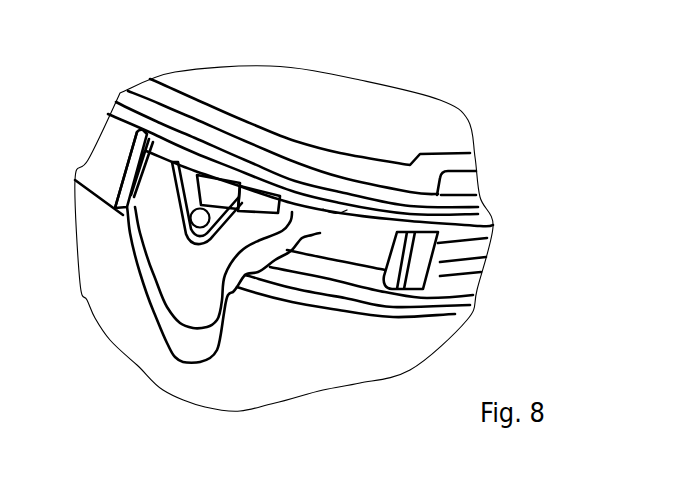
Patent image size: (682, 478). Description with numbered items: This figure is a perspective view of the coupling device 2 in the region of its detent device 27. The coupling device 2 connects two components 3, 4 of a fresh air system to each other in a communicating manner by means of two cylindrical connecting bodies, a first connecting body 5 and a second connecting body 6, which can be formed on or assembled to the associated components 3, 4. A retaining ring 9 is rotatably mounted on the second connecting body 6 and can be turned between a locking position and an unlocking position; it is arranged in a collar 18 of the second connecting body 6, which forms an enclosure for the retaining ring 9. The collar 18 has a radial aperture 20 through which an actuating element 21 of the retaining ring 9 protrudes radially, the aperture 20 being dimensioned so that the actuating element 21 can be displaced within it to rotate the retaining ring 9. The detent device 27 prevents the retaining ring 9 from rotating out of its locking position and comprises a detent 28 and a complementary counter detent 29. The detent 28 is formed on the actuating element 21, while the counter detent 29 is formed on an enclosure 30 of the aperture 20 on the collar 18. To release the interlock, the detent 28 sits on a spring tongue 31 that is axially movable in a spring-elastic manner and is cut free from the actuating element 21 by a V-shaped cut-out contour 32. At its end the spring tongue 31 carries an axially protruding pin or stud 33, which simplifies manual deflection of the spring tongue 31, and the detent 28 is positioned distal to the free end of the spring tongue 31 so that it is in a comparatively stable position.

The coupling device 2 is at (532, 192).
The first component 3 is at (431, 116).
The second component 4 is at (103, 298).
The first connecting body 5 is at (447, 135).
The second connecting body 6 is at (122, 349).
The retaining ring 9 is at (341, 249).
The collar 18 is at (117, 148).
The radial aperture 20 is at (132, 144).
The actuating element 21 is at (171, 361).
The detent device 27 is at (292, 176).
The detent 28 is at (212, 178).
The counter detent 29 is at (255, 186).
The enclosure 30 is at (350, 210).
The spring tongue 31 is at (197, 176).
The cut-out contour 32 is at (175, 158).
The pin or stud 33 is at (197, 218).